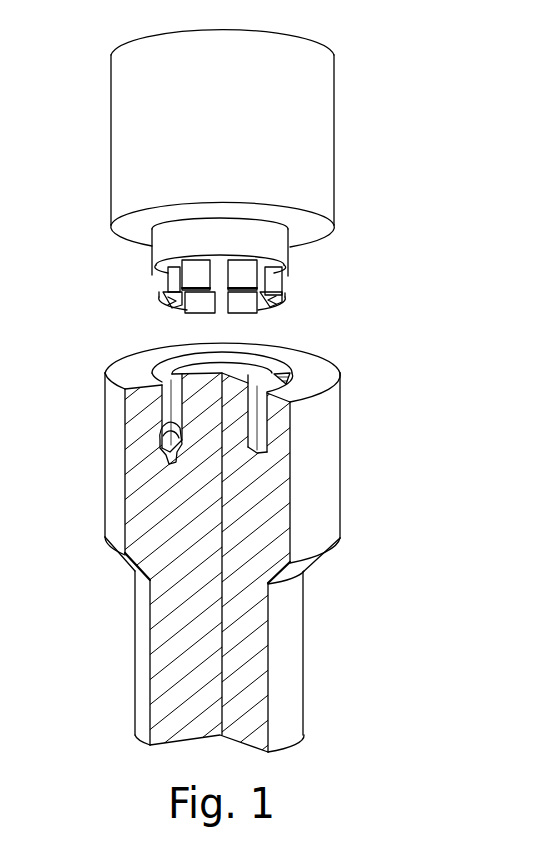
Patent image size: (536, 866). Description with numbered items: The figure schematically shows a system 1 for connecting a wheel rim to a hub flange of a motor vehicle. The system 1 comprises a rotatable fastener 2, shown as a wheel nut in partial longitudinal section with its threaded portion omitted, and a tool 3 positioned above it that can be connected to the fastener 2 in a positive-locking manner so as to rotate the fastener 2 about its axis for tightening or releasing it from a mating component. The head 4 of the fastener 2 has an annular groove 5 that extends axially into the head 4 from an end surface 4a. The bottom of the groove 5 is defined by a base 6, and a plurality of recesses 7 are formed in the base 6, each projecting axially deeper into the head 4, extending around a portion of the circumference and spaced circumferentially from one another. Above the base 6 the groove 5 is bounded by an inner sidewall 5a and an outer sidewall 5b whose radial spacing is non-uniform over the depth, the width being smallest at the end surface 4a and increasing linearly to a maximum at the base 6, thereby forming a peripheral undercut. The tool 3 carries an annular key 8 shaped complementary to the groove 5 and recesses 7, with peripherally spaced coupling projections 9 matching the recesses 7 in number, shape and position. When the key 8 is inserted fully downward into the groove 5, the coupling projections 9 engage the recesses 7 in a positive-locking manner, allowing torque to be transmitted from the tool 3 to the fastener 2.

The system 1 is at (418, 233).
The fastener 2 is at (348, 473).
The tool 3 is at (103, 133).
The head 4 is at (310, 434).
The end surface 4a is at (143, 362).
The annular groove 5 is at (272, 362).
The inner sidewall 5a is at (160, 400).
The outer sidewall 5b is at (284, 374).
The base 6 is at (168, 448).
The recesses 7 is at (188, 446).
The annular key 8 is at (162, 254).
The coupling projections 9 is at (192, 273).